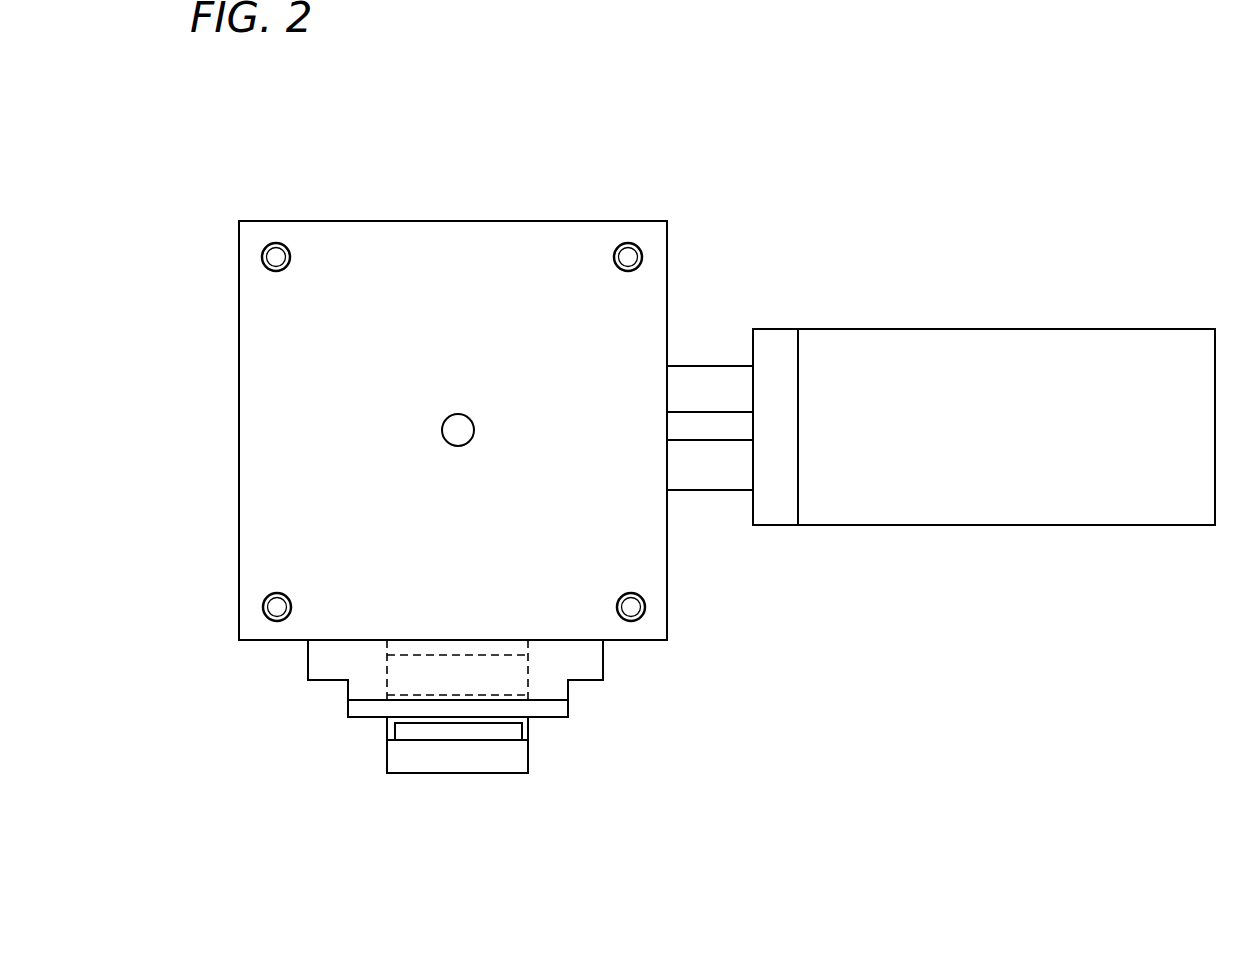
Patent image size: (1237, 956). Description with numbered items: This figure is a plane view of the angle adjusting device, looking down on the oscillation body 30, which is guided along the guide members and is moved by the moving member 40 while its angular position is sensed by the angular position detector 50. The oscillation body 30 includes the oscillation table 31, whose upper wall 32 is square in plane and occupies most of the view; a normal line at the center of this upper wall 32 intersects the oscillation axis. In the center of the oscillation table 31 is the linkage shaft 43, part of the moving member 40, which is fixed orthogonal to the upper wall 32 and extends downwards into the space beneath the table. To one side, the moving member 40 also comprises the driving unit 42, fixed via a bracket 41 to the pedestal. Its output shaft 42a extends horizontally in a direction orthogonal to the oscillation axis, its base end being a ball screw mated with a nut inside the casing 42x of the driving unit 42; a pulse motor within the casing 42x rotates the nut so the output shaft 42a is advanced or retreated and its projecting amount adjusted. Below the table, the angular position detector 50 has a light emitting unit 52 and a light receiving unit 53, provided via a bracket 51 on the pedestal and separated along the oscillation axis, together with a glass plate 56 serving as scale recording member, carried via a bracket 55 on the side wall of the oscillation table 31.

The oscillation body 30 is at (602, 221).
The oscillation table 31 is at (408, 221).
The upper wall 32 is at (498, 243).
The linkage shaft 43 is at (462, 428).
The moving member 40 is at (777, 328).
The bracket 41 is at (715, 478).
The driving unit 42 is at (993, 507).
The casing 42x is at (977, 348).
The output shaft 42a is at (703, 422).
The angular position detector 50 is at (567, 732).
The bracket 51 is at (528, 730).
The light emitting unit 52 is at (472, 728).
The light receiving unit 53 is at (468, 655).
The bracket 55 is at (593, 660).
The glass plate 56 is at (558, 706).